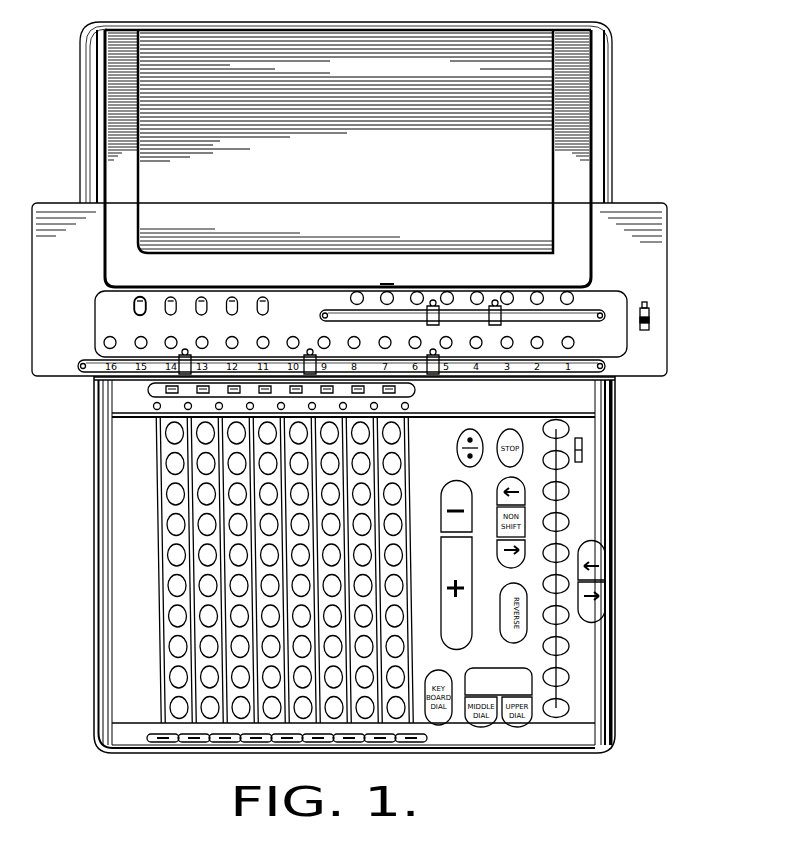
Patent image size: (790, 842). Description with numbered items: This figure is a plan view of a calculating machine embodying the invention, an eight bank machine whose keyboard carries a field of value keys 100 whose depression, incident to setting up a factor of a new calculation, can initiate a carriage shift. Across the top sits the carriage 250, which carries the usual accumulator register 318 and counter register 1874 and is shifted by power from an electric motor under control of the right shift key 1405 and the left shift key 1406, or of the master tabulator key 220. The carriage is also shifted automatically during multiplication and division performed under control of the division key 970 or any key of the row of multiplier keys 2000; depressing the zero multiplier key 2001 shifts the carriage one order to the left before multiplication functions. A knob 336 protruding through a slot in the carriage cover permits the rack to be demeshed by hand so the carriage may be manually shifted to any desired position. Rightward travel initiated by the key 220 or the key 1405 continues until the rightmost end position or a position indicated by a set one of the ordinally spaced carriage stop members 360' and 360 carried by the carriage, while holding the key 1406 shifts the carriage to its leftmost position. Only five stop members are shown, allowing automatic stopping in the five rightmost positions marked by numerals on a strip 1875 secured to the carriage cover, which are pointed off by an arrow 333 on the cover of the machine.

The value key 100 is at (180, 718).
The carriage 250 is at (690, 280).
The accumulator register 318 is at (104, 342).
The arrow 333 is at (381, 280).
The knob 336 is at (646, 333).
The carriage stop member 360 is at (202, 291).
The carriage stop member 360' is at (95, 311).
The division key 970 is at (471, 429).
The counter register 1874 is at (450, 297).
The strip 1875 is at (589, 310).
The right shift key 1405 is at (600, 608).
The left shift key 1406 is at (600, 573).
The multiplier keys 2000 is at (569, 490).
The zero multiplier key 2001 is at (556, 718).
The master tabulator key 220 is at (516, 668).